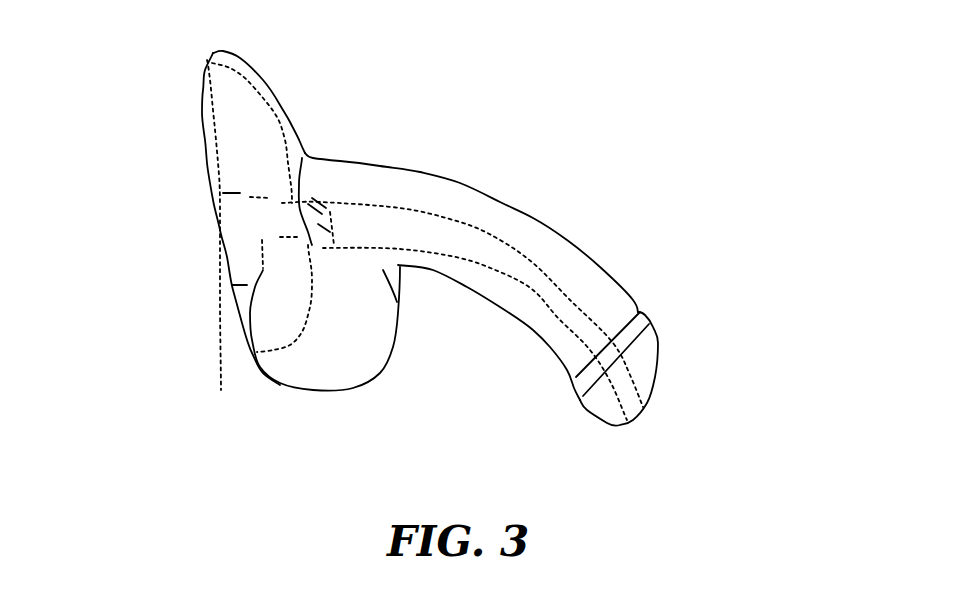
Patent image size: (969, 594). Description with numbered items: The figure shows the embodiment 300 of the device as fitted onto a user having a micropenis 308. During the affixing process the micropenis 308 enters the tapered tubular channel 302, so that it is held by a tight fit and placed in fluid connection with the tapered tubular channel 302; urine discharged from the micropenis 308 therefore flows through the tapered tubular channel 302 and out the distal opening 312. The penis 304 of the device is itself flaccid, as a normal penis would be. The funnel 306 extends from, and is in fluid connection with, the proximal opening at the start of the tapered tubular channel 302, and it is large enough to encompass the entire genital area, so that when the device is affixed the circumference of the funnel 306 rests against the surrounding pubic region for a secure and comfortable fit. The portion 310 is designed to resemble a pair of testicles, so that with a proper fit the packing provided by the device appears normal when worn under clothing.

The embodiment 300 is at (742, 214).
The tapered tubular channel 302 is at (542, 287).
The penis 304 is at (453, 203).
The funnel 306 is at (228, 124).
The micropenis 308 is at (245, 232).
The portion 310 is at (323, 370).
The distal opening 312 is at (633, 407).